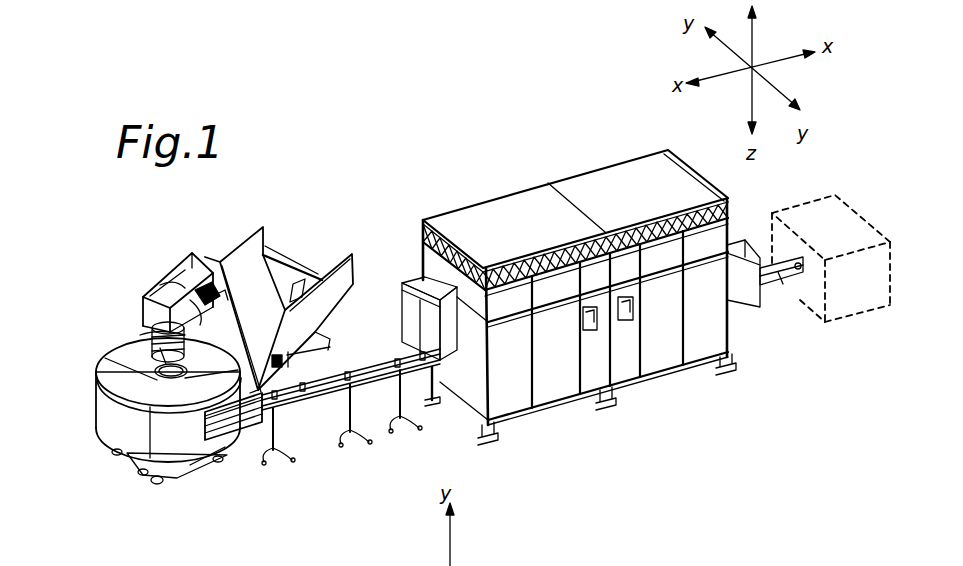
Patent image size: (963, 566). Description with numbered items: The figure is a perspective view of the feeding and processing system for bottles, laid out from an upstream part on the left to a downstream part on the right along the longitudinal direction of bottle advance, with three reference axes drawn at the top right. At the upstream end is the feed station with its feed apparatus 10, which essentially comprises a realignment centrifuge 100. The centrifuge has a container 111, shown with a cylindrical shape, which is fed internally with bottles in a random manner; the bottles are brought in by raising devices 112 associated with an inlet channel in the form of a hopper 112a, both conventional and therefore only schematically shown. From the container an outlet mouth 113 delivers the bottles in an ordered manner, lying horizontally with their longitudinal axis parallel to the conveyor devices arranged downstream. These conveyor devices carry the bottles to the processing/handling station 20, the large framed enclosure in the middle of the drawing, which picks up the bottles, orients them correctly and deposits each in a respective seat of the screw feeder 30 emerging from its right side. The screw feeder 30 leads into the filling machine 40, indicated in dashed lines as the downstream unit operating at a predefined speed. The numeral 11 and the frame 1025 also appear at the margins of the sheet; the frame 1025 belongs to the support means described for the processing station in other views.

The feed apparatus 10 is at (428, 190).
The rotary table 11 is at (103, 460).
The processing station 20 is at (509, 153).
The screw feeder 30 is at (778, 277).
The filling machine 40 is at (848, 297).
The realignment centrifuge 100 is at (244, 470).
The container 111 is at (116, 328).
The raising devices 112 is at (190, 280).
The hopper 112a is at (143, 330).
The outlet mouth 113 is at (262, 408).
The frame 1025 is at (843, 556).